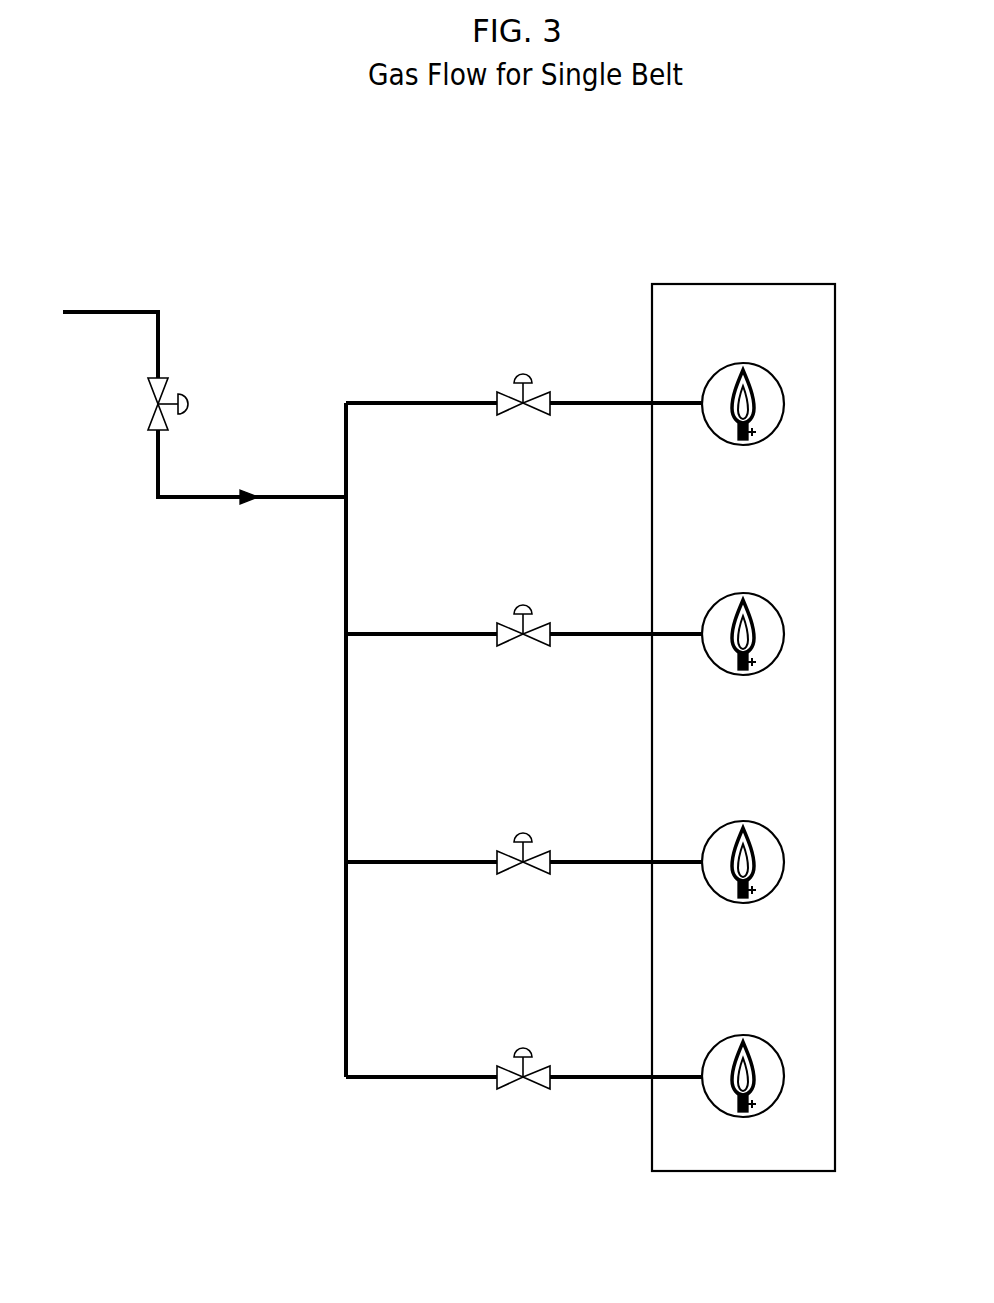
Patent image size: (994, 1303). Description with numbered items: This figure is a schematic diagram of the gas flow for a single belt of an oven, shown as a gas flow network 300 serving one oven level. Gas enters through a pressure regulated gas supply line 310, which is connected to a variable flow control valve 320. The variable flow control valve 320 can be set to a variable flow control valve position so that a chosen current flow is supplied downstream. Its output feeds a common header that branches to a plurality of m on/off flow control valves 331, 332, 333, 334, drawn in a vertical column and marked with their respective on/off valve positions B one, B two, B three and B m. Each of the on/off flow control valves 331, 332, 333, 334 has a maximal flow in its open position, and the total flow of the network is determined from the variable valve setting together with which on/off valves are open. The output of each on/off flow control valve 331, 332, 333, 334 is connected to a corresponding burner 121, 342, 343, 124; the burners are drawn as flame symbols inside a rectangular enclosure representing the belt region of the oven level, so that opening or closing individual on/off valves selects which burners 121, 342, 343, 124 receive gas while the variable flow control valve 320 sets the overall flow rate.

The gas flow network 300 is at (795, 203).
The pressure regulated gas supply line 310 is at (102, 307).
The variable flow control valve 320 is at (167, 365).
The on/off flow control valve 331 is at (554, 390).
The on/off flow control valve 332 is at (543, 614).
The on/off flow control valve 333 is at (543, 849).
The on/off flow control valve 334 is at (557, 1060).
The burner 121 is at (763, 361).
The burner 342 is at (752, 586).
The burner 343 is at (752, 818).
The burner 124 is at (764, 1031).